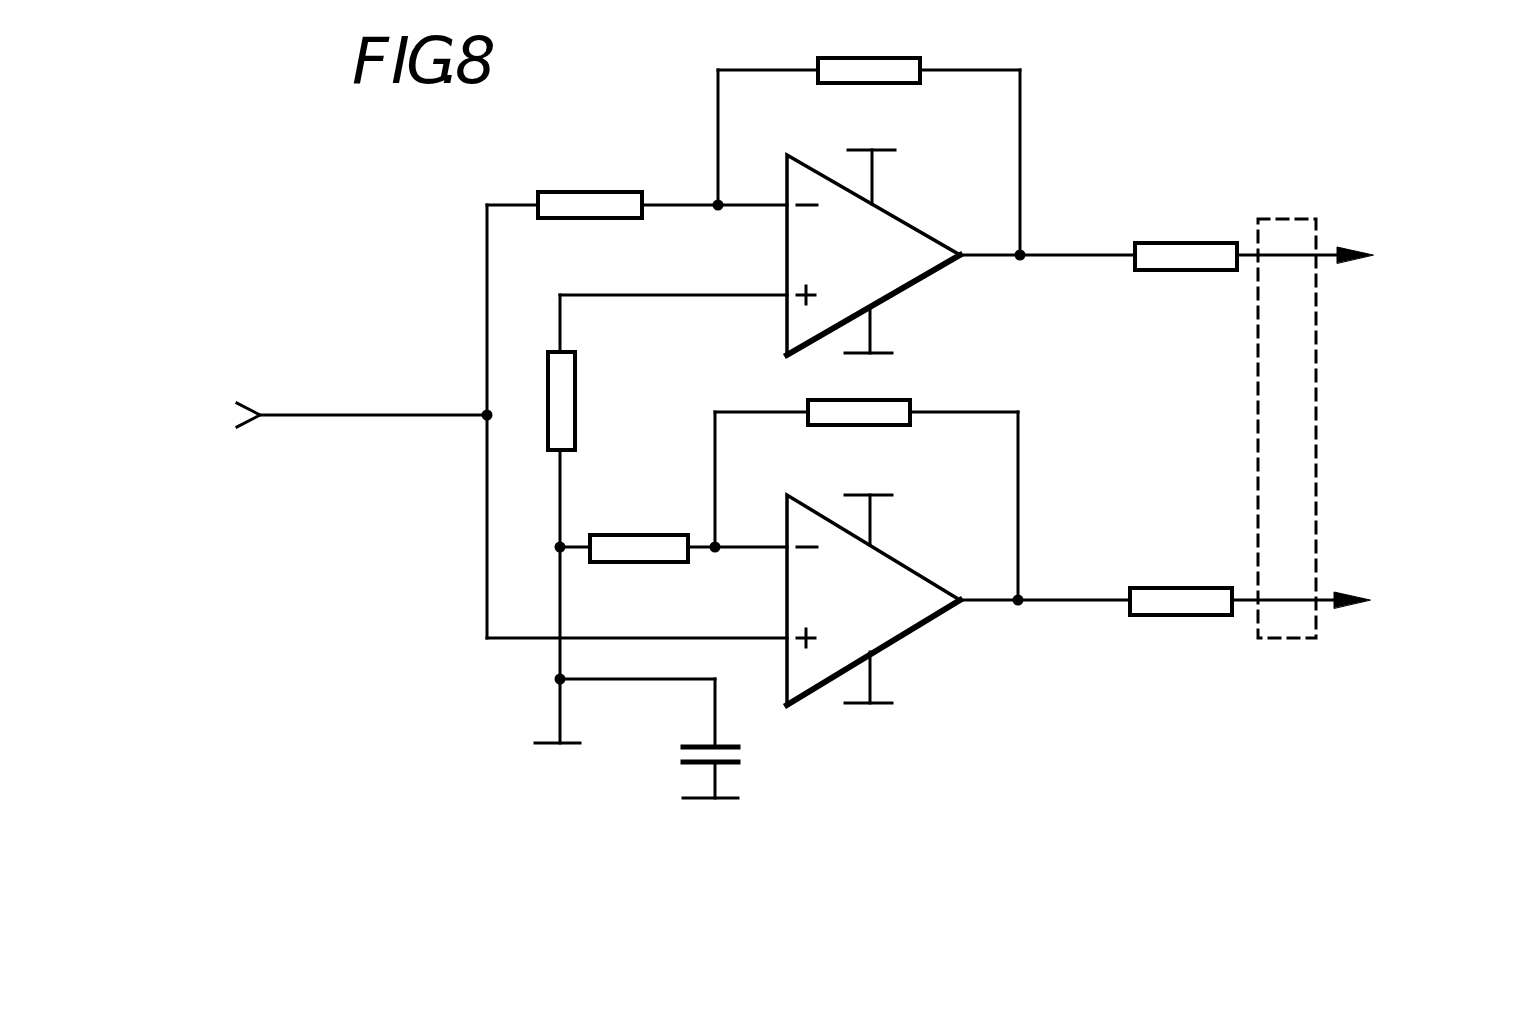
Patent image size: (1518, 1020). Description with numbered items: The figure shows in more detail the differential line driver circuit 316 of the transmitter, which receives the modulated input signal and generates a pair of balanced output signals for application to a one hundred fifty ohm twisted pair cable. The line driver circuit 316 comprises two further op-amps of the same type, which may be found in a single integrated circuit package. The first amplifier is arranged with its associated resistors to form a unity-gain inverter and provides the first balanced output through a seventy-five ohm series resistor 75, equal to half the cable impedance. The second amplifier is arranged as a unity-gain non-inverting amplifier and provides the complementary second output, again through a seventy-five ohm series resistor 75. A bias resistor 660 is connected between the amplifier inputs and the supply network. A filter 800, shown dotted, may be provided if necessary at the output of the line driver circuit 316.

The differential line driver circuit 316 is at (1327, 97).
The filter 800 is at (1280, 640).
The 660 ohm bias resistor 660 is at (667, 519).
The 75 ohm output series resistor 75 is at (1183, 409).